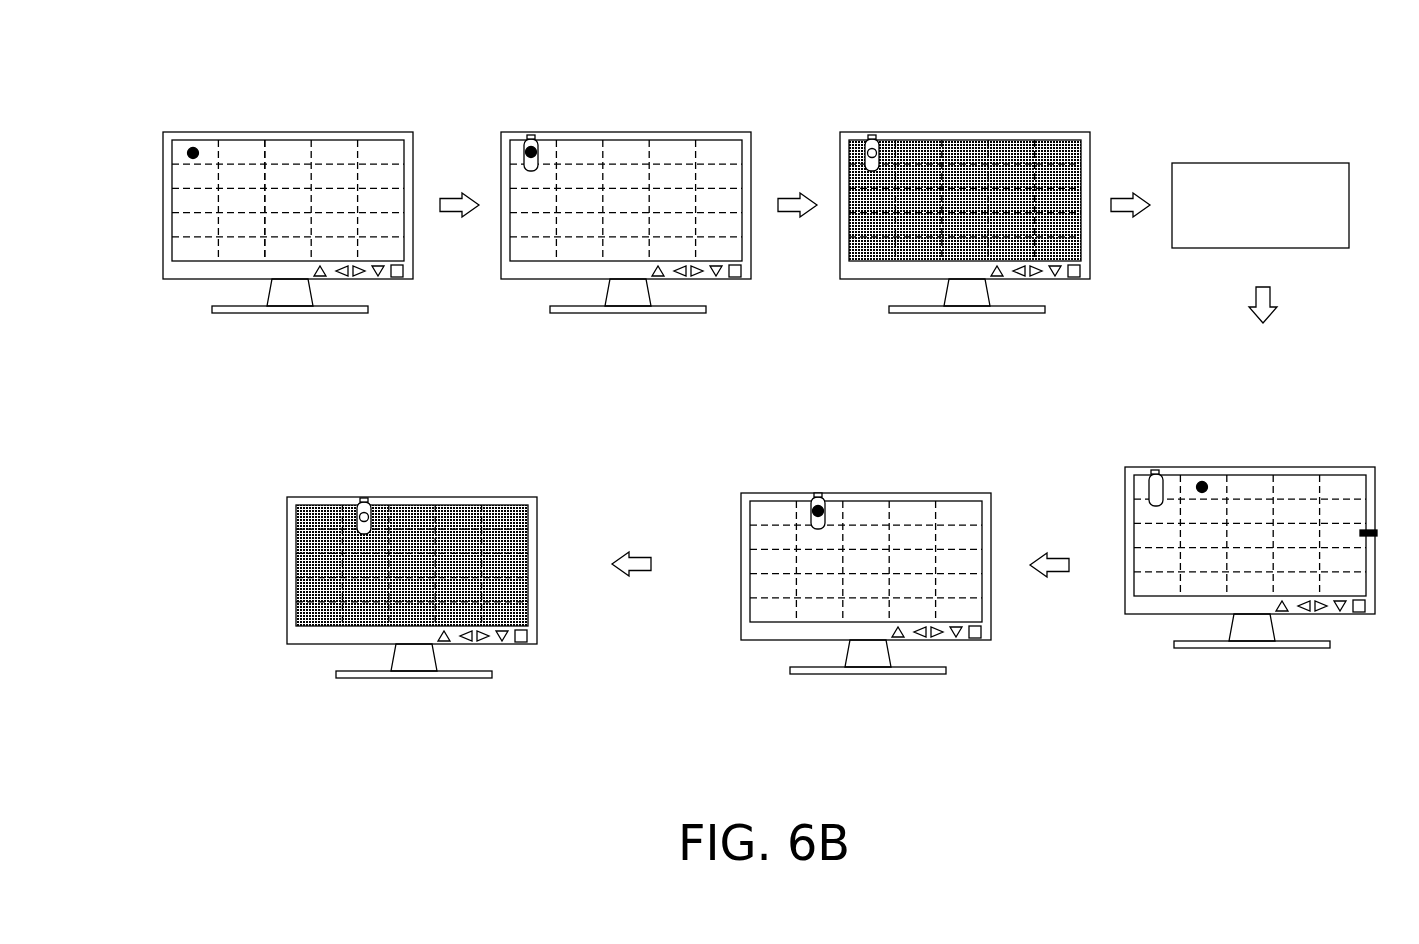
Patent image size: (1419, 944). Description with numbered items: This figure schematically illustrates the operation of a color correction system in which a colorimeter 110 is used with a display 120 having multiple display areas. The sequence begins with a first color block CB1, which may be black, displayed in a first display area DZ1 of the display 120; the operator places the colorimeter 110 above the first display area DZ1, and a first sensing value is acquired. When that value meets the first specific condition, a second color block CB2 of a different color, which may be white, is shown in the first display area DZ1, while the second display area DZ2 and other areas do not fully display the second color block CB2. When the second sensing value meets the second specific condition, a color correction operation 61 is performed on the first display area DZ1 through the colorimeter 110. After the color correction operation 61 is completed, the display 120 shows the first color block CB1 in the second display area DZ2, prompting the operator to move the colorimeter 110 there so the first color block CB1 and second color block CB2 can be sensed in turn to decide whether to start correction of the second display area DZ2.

The colorimeter 110 is at (523, 157).
The display 120 is at (387, 137).
The color correction operation 61 is at (1252, 163).
The first color block CB1 is at (193, 145).
The second color block CB2 is at (877, 135).
The first display area DZ1 is at (210, 147).
The second display area DZ2 is at (252, 145).